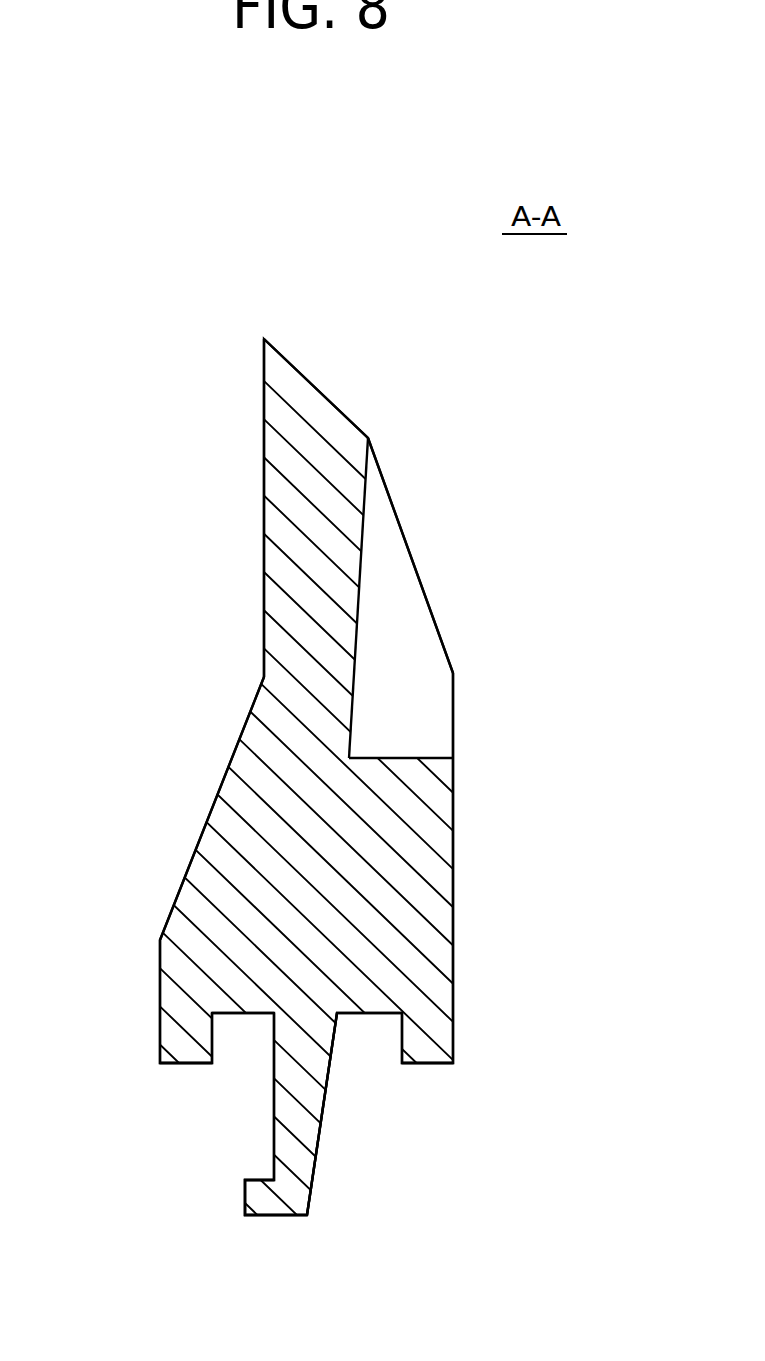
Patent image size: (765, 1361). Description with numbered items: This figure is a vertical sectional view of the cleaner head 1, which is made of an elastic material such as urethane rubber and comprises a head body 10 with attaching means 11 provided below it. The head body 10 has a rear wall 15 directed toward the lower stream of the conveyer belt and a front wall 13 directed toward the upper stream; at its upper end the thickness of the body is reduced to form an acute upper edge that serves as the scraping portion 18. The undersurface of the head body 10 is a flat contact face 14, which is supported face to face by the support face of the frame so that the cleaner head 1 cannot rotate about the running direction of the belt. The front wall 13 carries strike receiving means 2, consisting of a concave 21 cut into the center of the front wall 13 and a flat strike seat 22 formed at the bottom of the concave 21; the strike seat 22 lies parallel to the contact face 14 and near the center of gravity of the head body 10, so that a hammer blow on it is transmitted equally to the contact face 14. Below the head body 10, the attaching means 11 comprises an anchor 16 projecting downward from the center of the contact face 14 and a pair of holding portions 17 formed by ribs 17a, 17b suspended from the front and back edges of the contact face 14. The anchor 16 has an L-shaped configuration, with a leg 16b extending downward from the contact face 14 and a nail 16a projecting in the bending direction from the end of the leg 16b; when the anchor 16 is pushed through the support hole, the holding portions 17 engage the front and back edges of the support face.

The cleaner head 1 is at (154, 293).
The strike receiving means 2 is at (576, 621).
The head body 10 is at (264, 613).
The attaching means 11 is at (178, 1175).
The front wall 13 is at (417, 573).
The contact face 14 is at (245, 1013).
The rear wall 15 is at (264, 429).
The anchor 16 is at (427, 1188).
The nail 16a is at (258, 1217).
The leg 16b is at (325, 1105).
The holding portions 17 is at (316, 1119).
The rib 17a is at (433, 1065).
The rib 17b is at (185, 1062).
The scraping portion 18 is at (264, 337).
The concave 21 is at (355, 637).
The strike seat 22 is at (417, 758).